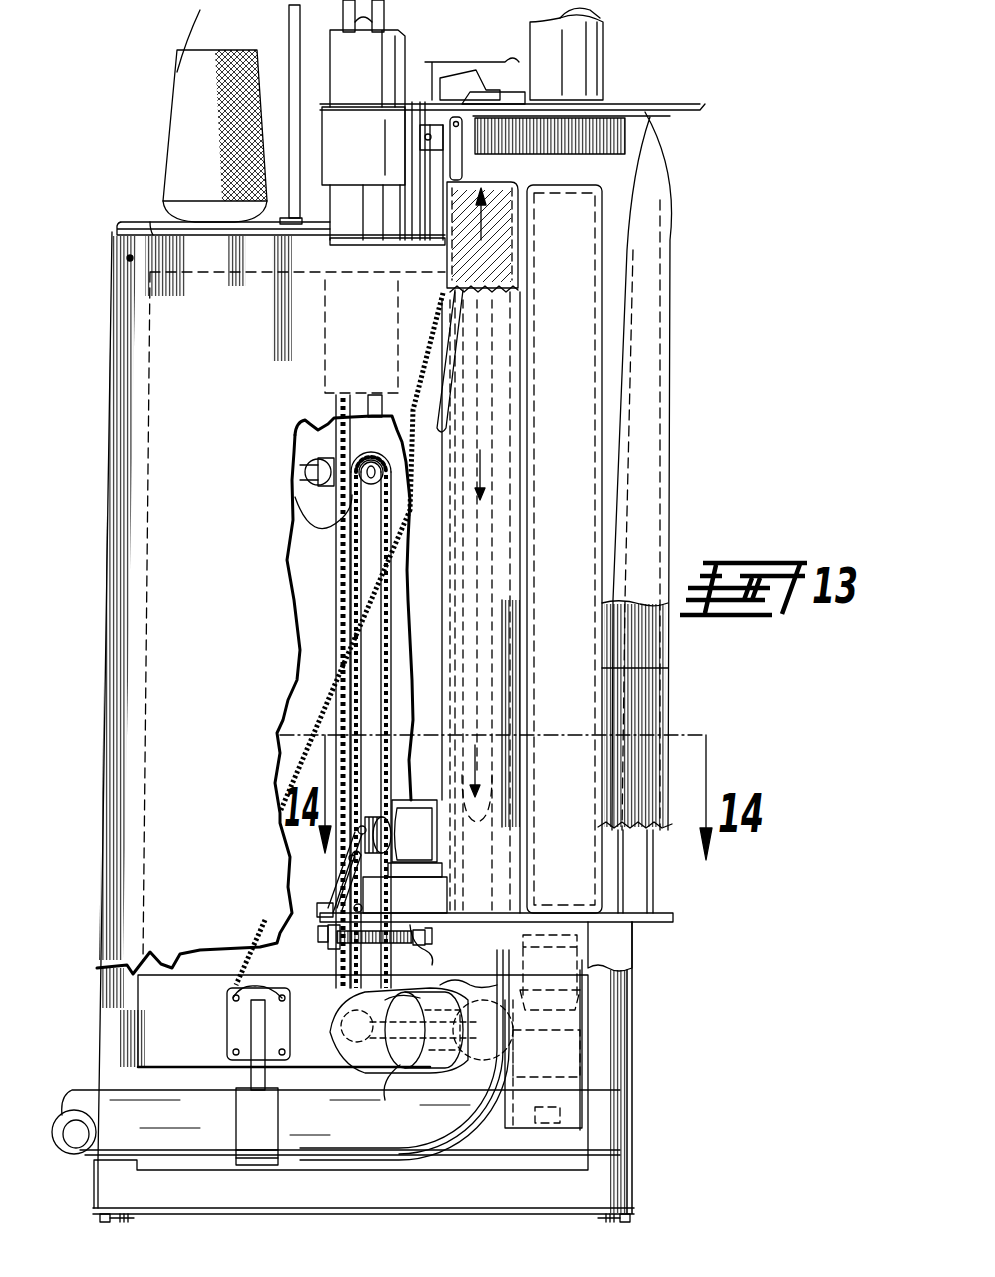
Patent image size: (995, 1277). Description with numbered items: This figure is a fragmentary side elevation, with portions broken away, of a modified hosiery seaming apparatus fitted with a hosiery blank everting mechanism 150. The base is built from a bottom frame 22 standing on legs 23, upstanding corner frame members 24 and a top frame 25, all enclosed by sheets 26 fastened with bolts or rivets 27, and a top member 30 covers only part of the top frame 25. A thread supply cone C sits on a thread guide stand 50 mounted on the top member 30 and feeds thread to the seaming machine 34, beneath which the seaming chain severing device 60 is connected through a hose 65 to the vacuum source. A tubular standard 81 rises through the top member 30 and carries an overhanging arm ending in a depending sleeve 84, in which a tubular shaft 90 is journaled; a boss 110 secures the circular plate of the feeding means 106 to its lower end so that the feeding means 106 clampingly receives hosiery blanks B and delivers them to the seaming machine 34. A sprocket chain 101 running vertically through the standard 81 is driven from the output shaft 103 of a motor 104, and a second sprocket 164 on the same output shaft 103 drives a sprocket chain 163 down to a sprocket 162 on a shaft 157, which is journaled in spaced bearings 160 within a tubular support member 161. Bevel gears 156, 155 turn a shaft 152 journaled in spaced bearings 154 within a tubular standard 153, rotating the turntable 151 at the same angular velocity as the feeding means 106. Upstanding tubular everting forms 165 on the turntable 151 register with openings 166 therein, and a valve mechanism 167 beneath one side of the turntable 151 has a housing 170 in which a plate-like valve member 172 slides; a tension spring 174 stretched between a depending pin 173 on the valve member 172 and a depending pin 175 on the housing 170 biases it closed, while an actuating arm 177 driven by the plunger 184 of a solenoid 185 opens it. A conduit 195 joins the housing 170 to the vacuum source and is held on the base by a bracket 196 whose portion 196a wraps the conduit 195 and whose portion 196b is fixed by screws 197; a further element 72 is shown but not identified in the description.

The bottom frame 22 is at (408, 1205).
The legs 23 is at (104, 1222).
The corner frame members 24 is at (108, 1012).
The top frame 25 is at (223, 258).
The sheets 26 is at (238, 637).
The bolts or rivets 27 is at (128, 258).
The top member 30 is at (150, 222).
The seaming machine 34 is at (505, 60).
The thread guide stand 50 is at (290, 30).
The seaming chain severing device 60 is at (417, 150).
The hose 65 is at (441, 414).
The drive chain 72 is at (434, 356).
The tubular standard 81 is at (372, 73).
The depending sleeve 84 is at (604, 58).
The tubular shaft 90 is at (600, 20).
The sprocket chain 101 is at (349, 23).
The output shaft 103 is at (302, 476).
The motor 104 is at (305, 528).
The feeding means 106 is at (655, 102).
The boss 110 is at (576, 100).
The hosiery blank everting mechanism 150 is at (690, 500).
The turntable 151 is at (662, 921).
The shaft 152 is at (592, 1050).
The tubular standard 153 is at (586, 1122).
The spaced bearings 154 is at (630, 957).
The bevel gear 155 is at (618, 1008).
The bevel gear 156 is at (624, 1026).
The shaft 157 is at (452, 1068).
The spaced bearings 160 is at (454, 1098).
The tubular support member 161 is at (400, 1068).
The sprocket 162 is at (384, 998).
The sprocket chain 163 is at (336, 952).
The sprocket 164 is at (390, 478).
The everting forms 165 is at (566, 881).
The openings 166 is at (643, 930).
The valve mechanism 167 is at (318, 870).
The housing 170 is at (443, 930).
The valve member 172 is at (362, 908).
The depending pin 173 is at (324, 936).
The tension spring 174 is at (411, 950).
The depending pin 175 is at (452, 900).
The actuating arm 177 is at (326, 896).
The plunger 184 is at (386, 818).
The solenoid 185 is at (424, 838).
The conduit 195 is at (95, 1114).
The bracket 196 is at (204, 1040).
The portion 196a is at (262, 1150).
The portion 196b is at (282, 1042).
The screws 197 is at (232, 998).
The hosiery blanks B is at (668, 270).
The thread supply cones C is at (182, 133).